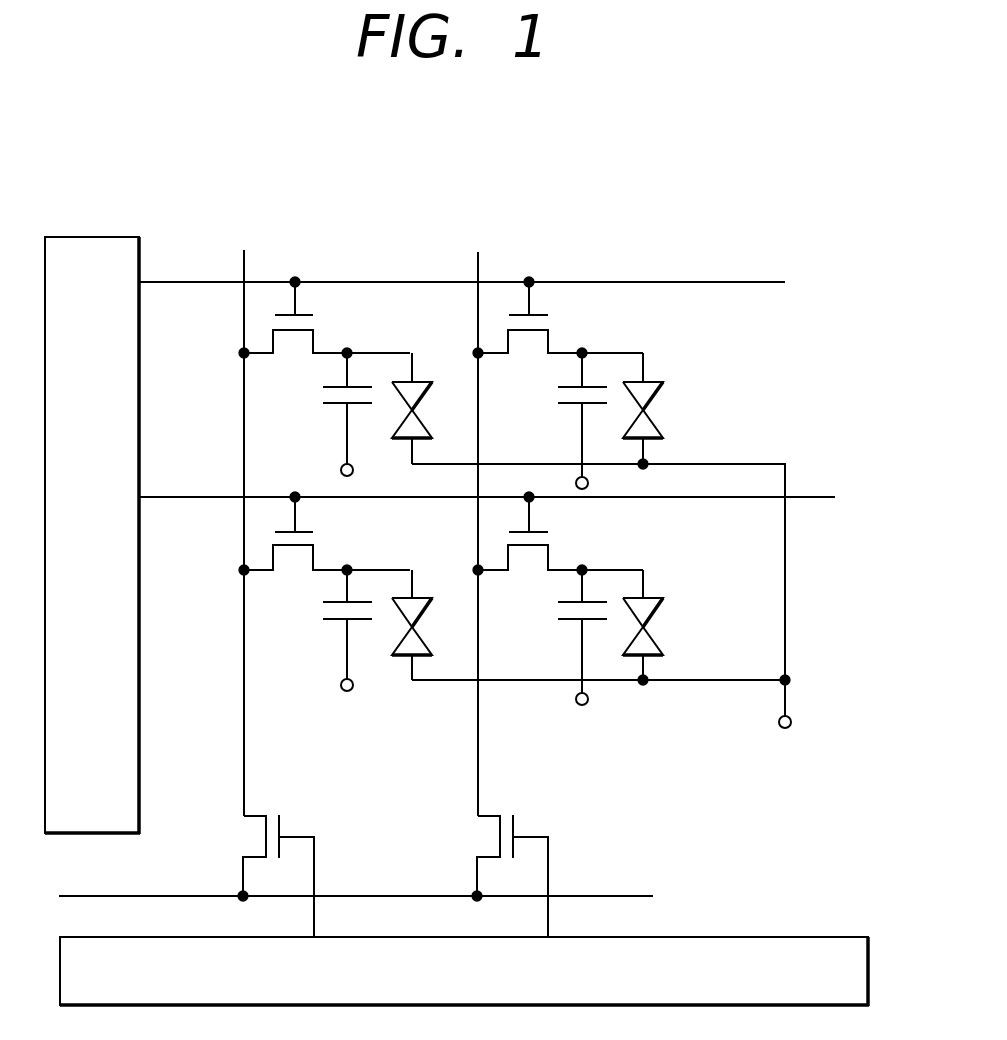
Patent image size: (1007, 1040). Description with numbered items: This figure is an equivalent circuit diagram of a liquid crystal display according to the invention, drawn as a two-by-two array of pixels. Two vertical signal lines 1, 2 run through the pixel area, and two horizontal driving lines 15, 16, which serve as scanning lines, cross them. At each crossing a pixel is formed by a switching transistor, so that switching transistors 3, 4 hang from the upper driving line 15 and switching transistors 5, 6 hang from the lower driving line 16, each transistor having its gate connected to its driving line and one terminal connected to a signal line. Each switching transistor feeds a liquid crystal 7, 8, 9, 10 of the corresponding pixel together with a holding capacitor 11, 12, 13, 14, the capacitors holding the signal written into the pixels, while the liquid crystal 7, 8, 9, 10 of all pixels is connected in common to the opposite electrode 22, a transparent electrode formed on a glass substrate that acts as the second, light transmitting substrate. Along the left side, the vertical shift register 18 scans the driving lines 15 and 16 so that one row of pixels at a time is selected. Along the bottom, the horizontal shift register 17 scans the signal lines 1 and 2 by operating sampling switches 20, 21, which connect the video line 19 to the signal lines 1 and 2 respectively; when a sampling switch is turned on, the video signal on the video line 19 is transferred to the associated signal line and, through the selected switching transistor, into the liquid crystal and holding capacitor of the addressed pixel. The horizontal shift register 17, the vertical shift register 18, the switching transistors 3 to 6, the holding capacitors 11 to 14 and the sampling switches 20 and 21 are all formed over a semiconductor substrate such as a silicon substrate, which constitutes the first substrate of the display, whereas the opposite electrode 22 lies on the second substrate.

The signal line 1 is at (246, 737).
The signal line 2 is at (480, 737).
The switching transistor 3 is at (320, 323).
The switching transistor 4 is at (555, 323).
The switching transistor 5 is at (320, 539).
The switching transistor 6 is at (555, 539).
The liquid crystal 7 is at (418, 380).
The liquid crystal 8 is at (657, 382).
The liquid crystal 9 is at (418, 597).
The liquid crystal 10 is at (657, 598).
The holding capacitor 11 is at (332, 403).
The holding capacitor 12 is at (568, 403).
The holding capacitor 13 is at (337, 619).
The holding capacitor 14 is at (572, 619).
The driving line 15 is at (730, 280).
The driving line 16 is at (193, 497).
The horizontal shift register 17 is at (817, 937).
The vertical shift register 18 is at (108, 237).
The video line 19 is at (627, 896).
The sampling switch 20 is at (280, 822).
The sampling switch 21 is at (514, 822).
The opposite electrode 22 is at (785, 728).